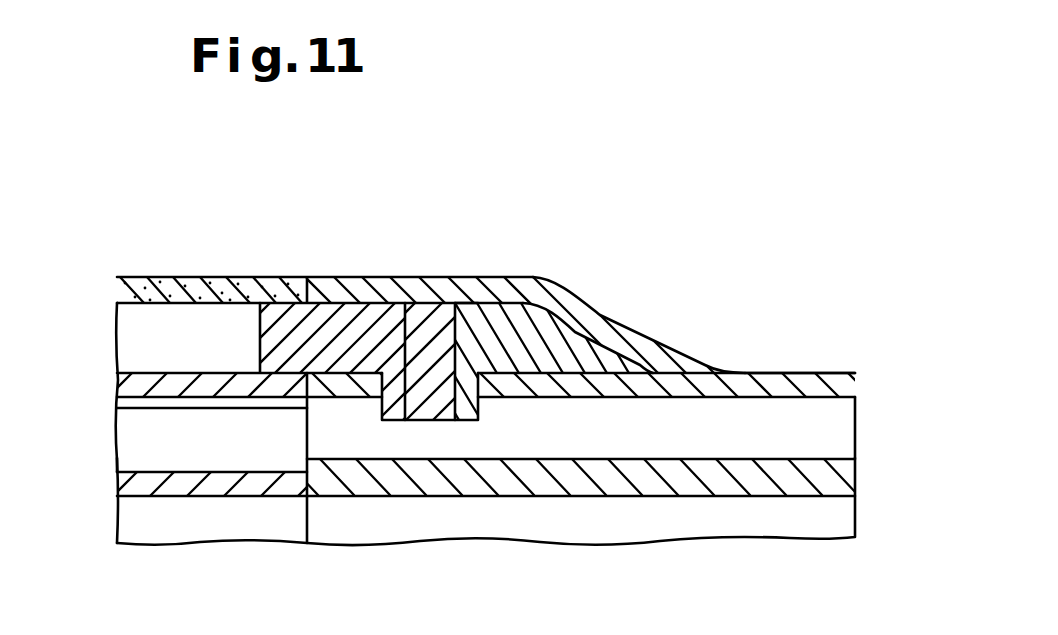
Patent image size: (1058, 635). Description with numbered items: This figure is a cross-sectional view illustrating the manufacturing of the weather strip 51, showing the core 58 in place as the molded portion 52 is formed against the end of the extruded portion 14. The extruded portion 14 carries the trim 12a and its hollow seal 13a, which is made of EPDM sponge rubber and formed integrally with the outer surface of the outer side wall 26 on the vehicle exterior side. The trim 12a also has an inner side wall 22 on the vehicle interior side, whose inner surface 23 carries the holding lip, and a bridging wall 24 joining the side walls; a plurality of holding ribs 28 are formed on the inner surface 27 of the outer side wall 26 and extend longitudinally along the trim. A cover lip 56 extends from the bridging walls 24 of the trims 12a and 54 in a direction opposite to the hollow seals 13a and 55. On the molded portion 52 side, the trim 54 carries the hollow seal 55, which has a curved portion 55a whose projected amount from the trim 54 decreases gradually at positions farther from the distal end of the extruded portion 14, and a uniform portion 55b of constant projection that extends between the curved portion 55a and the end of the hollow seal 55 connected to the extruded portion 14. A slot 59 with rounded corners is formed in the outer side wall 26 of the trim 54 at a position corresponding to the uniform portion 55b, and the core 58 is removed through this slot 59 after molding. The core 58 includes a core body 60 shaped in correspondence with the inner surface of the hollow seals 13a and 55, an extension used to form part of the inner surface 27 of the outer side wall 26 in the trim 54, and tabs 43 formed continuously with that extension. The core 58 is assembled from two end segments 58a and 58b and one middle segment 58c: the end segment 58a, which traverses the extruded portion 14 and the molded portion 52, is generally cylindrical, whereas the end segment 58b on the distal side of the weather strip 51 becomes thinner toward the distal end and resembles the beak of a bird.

The extruded portion 14 is at (225, 198).
The weather strip 51 is at (668, 190).
The molded portion 52 is at (753, 303).
The hollow seal 13a is at (160, 283).
The uniform portion 55b is at (525, 279).
The curved portion 55a is at (613, 312).
The hollow seal 55 is at (491, 302).
The core body 60 is at (280, 301).
The core 58 is at (517, 228).
The end segment 58a is at (372, 300).
The middle segment 58c is at (430, 300).
The end segment 58b is at (493, 300).
The inner surface 27 is at (175, 407).
The trim 54 is at (841, 371).
The outer side wall 26 is at (118, 385).
The holding ribs 28 is at (122, 408).
The bridging wall 24 is at (122, 452).
The inner side wall 22 is at (118, 487).
The cover lip 56 is at (122, 527).
The tabs 43 is at (463, 422).
The slot 59 is at (478, 395).
The trim 12a is at (175, 488).
The inner surface 23 is at (243, 458).